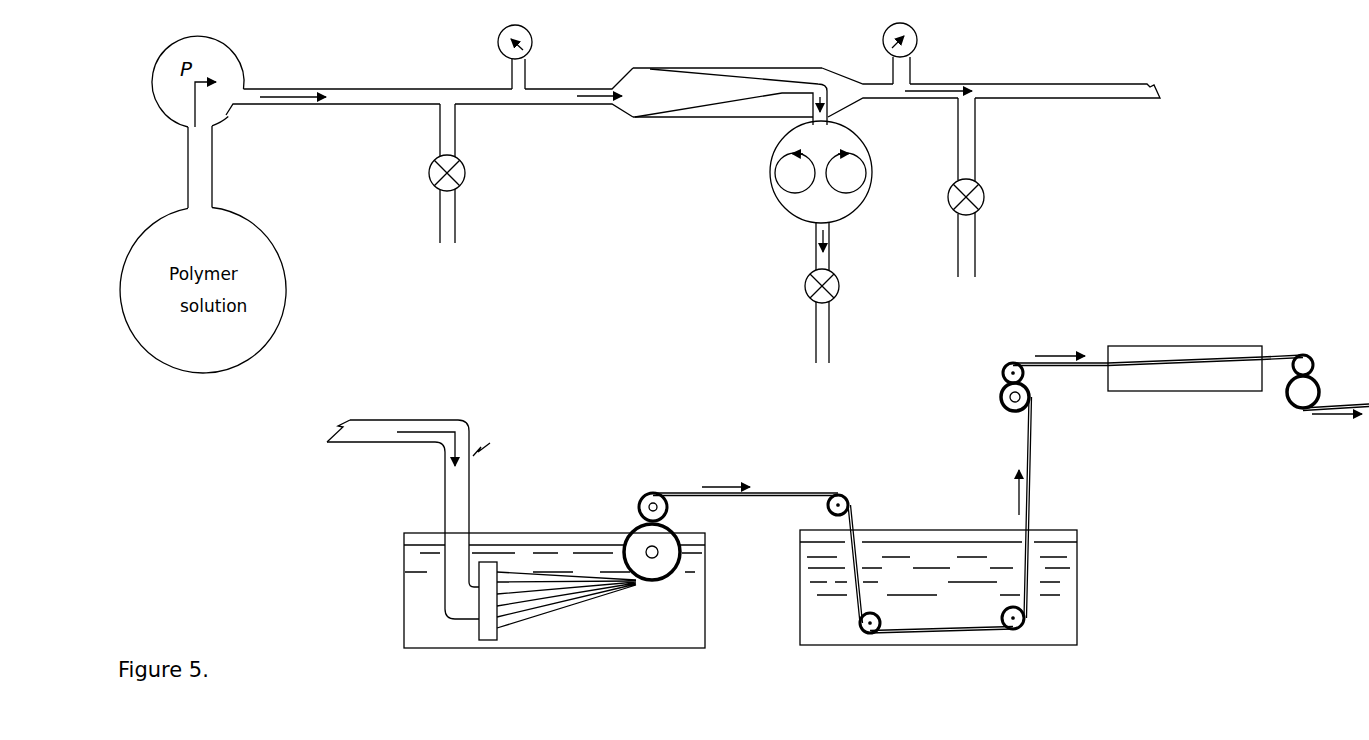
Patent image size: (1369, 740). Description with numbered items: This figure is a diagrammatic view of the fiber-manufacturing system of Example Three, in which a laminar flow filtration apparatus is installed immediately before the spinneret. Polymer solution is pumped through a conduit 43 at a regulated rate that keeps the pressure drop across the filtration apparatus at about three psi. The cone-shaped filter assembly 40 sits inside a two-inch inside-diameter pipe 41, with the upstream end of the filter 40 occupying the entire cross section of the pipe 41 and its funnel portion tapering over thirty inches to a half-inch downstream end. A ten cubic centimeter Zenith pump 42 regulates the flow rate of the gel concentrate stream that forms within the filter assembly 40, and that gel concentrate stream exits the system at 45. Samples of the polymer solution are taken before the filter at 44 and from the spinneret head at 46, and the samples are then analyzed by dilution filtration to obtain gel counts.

The filter assembly 40 is at (690, 110).
The pipe 41 is at (728, 119).
The Zenith pump 42 is at (789, 208).
The conduit 43 is at (383, 105).
The sampling location prior to the filter 44 is at (447, 242).
The gel concentrate stream exit 45 is at (818, 357).
The sampling location at the spinneret head 46 is at (965, 270).